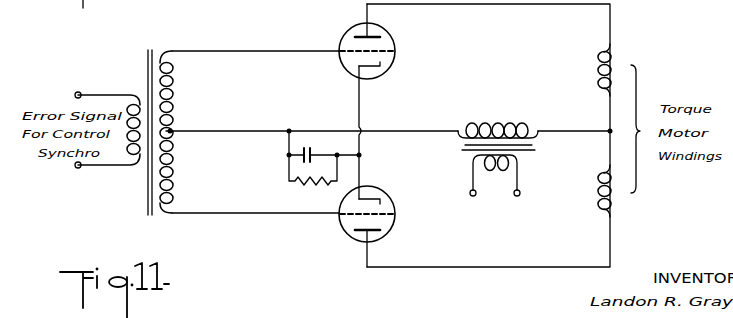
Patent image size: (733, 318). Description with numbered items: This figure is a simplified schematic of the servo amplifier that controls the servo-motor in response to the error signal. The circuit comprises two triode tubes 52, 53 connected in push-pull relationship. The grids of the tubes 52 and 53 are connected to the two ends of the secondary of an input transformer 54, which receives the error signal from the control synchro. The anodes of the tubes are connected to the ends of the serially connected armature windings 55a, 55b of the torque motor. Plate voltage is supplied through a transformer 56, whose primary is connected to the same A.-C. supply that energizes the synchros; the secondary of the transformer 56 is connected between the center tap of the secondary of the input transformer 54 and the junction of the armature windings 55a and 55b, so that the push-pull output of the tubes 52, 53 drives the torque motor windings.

The triode tube 52 is at (396, 53).
The triode tube 53 is at (396, 214).
The input transformer 54 is at (173, 81).
The armature winding 55a is at (611, 57).
The armature winding 55b is at (612, 210).
The transformer 56 is at (522, 124).